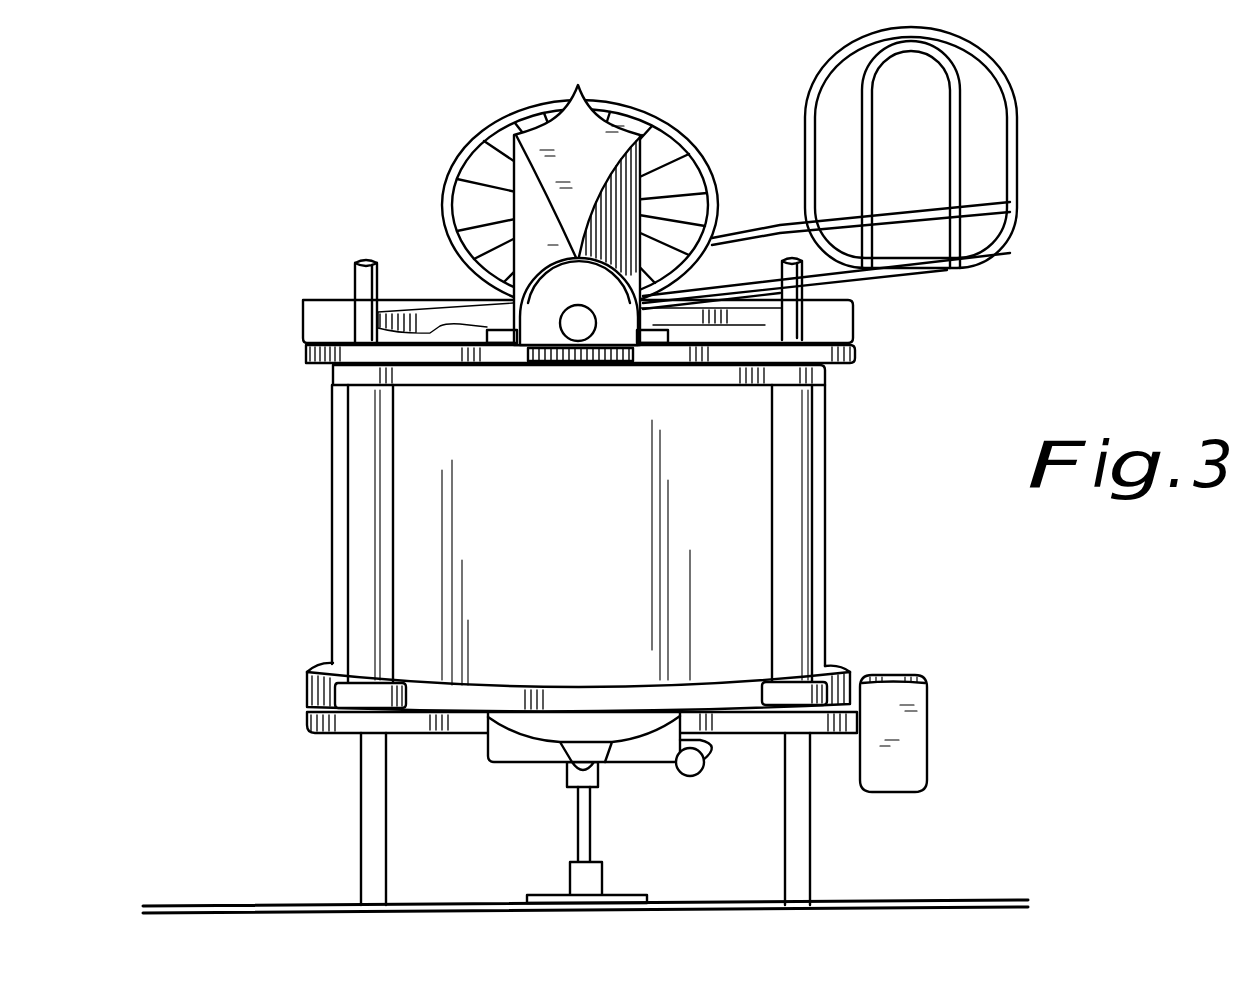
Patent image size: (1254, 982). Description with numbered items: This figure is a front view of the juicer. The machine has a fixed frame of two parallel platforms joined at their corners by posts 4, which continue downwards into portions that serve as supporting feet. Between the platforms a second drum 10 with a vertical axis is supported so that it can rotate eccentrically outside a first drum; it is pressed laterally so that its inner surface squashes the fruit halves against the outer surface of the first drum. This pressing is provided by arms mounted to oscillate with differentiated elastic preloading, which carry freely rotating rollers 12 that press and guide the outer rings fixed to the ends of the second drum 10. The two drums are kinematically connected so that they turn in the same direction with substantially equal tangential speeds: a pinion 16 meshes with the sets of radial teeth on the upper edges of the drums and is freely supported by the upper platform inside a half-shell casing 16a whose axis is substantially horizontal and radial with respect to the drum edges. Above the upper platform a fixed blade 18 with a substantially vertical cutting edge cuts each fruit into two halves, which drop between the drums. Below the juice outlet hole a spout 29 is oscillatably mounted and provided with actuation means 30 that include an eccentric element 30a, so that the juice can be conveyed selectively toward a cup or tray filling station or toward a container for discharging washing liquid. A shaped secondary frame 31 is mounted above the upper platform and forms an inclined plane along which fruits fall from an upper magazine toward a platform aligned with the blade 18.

The posts 4 is at (362, 282).
The second drum 10 is at (607, 602).
The freely rotating rollers 12 is at (790, 693).
The pinion 16 is at (582, 337).
The casing 16a is at (543, 305).
The fixed blade 18 is at (570, 143).
The spout 29 is at (560, 722).
The actuation means 30 is at (913, 712).
The eccentric element 30a is at (700, 740).
The shaped secondary frame 31 is at (1010, 200).